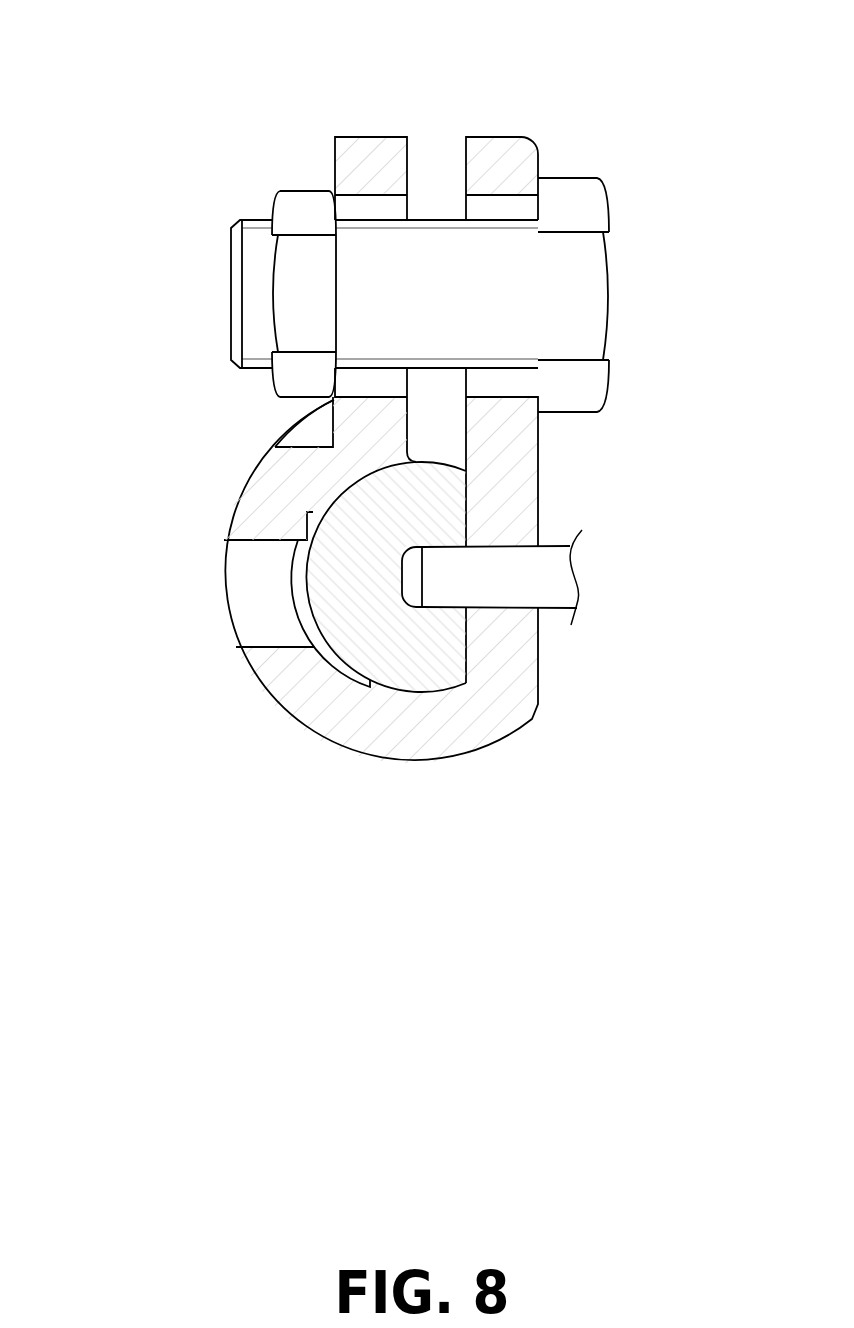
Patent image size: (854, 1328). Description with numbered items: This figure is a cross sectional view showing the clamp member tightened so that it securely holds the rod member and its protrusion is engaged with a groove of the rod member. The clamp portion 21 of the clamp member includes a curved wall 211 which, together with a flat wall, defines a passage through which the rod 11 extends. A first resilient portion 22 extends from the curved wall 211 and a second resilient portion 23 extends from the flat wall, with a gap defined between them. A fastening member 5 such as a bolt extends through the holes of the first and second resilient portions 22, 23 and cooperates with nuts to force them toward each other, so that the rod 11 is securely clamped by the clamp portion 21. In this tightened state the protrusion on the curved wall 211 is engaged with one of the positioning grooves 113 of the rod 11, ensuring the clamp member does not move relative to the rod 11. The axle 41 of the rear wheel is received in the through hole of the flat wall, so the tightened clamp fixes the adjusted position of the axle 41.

The fastening member 5 is at (505, 283).
The rod 11 is at (415, 672).
The clamp portion 21 is at (547, 765).
The first resilient portion 22 is at (390, 157).
The second resilient portion 23 is at (502, 157).
The axle 41 is at (563, 587).
The positioning groove 113 is at (297, 567).
The curved wall 211 is at (243, 515).